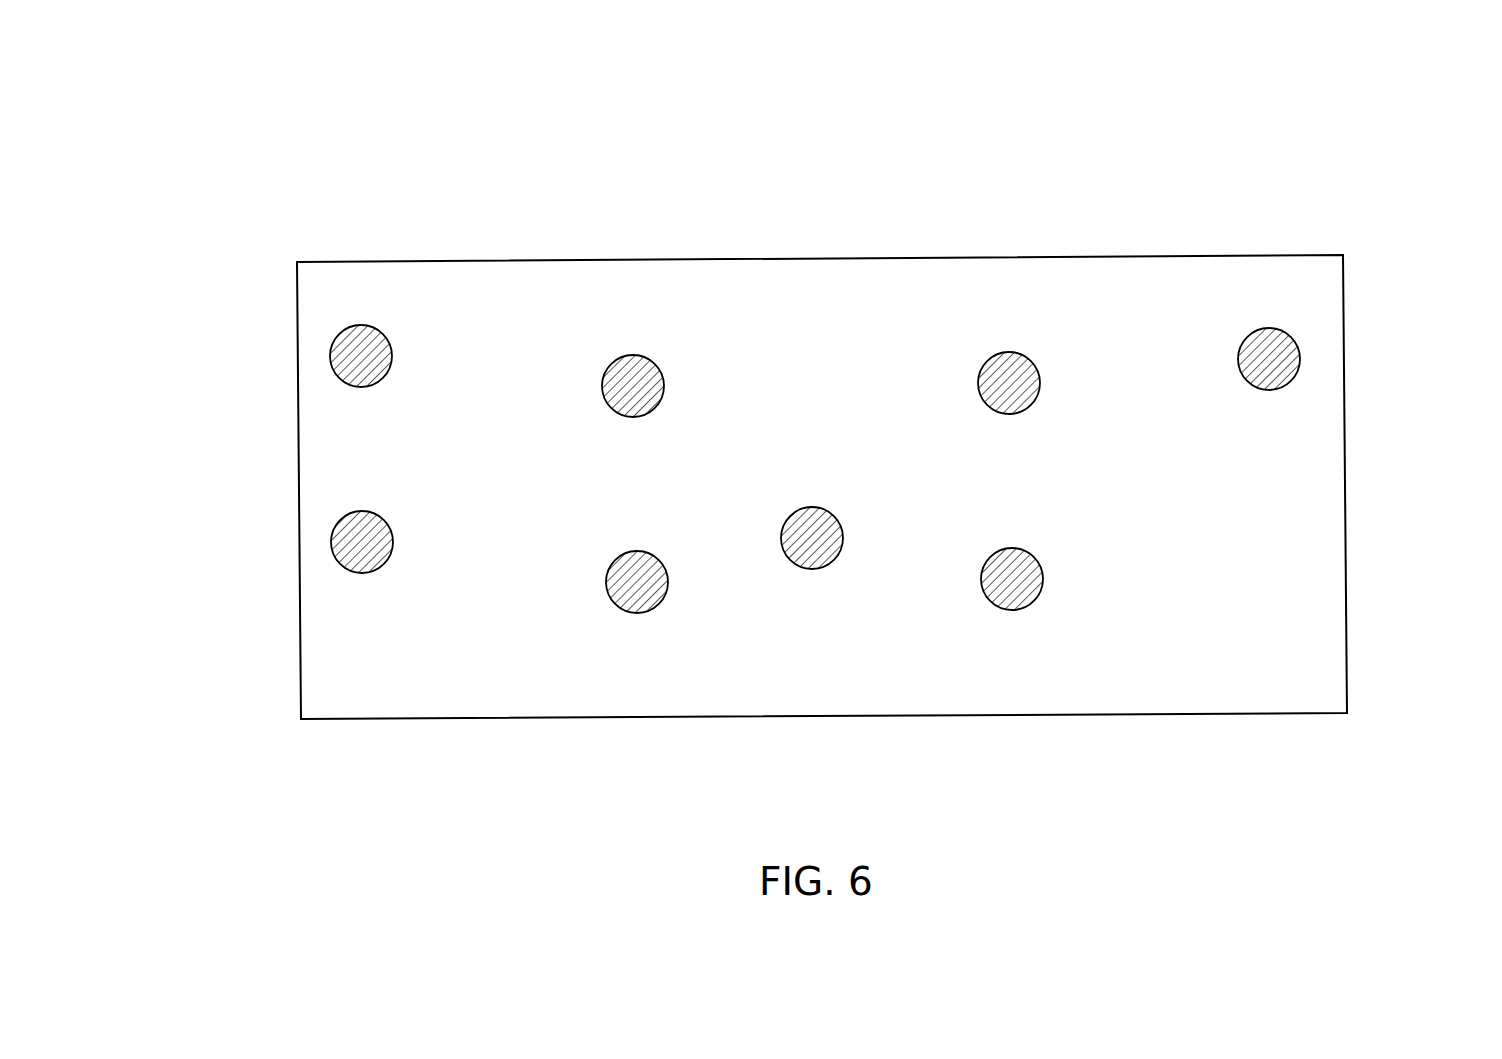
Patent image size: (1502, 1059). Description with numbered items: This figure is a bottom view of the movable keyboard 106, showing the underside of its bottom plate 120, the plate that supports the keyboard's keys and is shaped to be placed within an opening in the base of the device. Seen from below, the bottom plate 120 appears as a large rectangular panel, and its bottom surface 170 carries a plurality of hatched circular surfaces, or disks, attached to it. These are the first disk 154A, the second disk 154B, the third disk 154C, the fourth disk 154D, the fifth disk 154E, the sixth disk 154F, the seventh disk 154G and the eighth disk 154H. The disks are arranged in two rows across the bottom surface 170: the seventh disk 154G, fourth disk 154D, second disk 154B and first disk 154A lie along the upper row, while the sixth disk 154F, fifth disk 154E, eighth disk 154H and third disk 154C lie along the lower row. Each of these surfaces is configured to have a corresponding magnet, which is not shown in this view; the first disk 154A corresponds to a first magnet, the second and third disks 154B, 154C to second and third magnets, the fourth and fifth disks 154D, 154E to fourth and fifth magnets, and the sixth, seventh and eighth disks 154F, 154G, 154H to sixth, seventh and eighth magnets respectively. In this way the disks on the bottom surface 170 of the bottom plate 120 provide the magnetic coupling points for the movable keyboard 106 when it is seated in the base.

The movable keyboard 106 is at (264, 144).
The bottom plate 120 is at (298, 448).
The first disk 154A is at (1300, 359).
The second disk 154B is at (1006, 352).
The third disk 154C is at (1010, 610).
The fourth disk 154D is at (632, 355).
The fifth disk 154E is at (634, 613).
The sixth disk 154F is at (360, 573).
The seventh disk 154G is at (358, 325).
The eighth disk 154H is at (822, 568).
The bottom surface 170 is at (1260, 673).